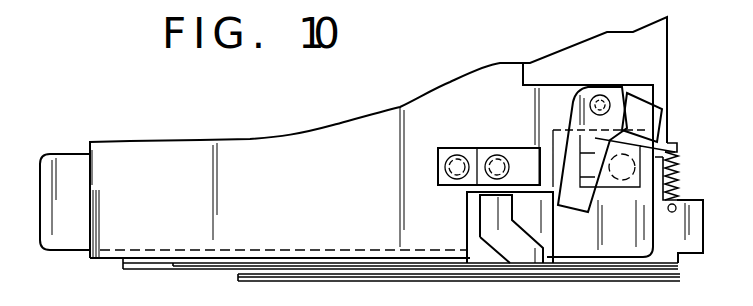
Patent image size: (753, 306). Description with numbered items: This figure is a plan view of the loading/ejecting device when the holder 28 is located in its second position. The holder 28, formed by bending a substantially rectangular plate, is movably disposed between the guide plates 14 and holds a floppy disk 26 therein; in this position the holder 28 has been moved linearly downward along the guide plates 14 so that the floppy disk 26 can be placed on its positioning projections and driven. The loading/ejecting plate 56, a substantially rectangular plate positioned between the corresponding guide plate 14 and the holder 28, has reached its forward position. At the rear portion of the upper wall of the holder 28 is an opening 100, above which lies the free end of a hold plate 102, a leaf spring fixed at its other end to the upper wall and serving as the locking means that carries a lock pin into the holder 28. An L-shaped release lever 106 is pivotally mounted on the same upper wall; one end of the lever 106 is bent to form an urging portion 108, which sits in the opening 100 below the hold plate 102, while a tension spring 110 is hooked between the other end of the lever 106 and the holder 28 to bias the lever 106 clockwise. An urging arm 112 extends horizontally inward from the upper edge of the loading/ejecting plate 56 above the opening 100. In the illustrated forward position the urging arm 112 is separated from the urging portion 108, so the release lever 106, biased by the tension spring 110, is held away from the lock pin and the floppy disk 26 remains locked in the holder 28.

The guide plate 14 is at (498, 281).
The floppy disk 26 is at (63, 245).
The holder 28 is at (105, 223).
The loading/ejecting plate 56 is at (186, 270).
The opening 100 is at (462, 227).
The hold plate 102 is at (485, 140).
The release lever 106 is at (656, 113).
The urging portion 108 is at (575, 201).
The tension spring 110 is at (676, 192).
The urging arm 112 is at (492, 212).